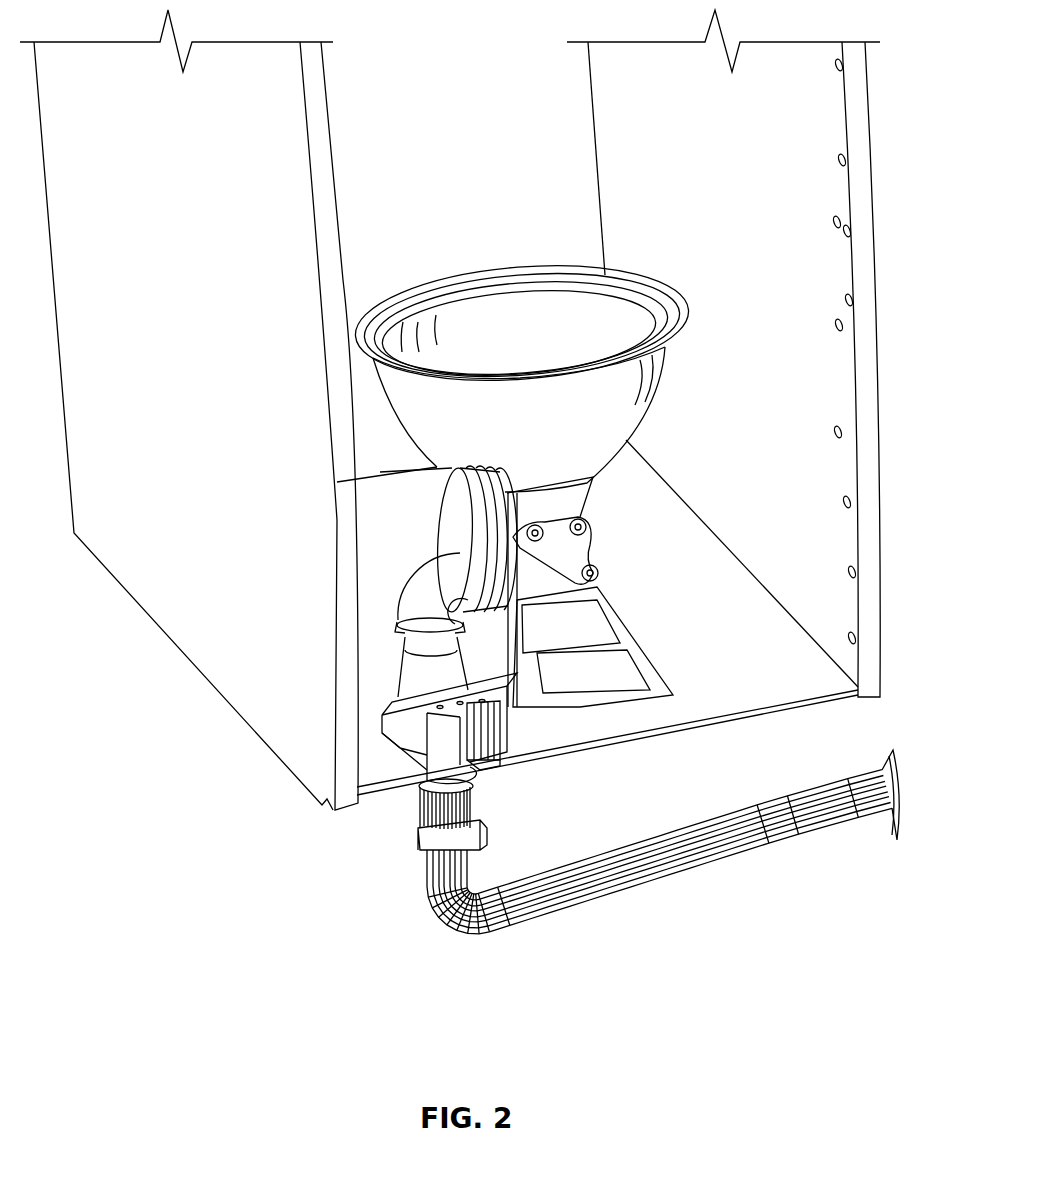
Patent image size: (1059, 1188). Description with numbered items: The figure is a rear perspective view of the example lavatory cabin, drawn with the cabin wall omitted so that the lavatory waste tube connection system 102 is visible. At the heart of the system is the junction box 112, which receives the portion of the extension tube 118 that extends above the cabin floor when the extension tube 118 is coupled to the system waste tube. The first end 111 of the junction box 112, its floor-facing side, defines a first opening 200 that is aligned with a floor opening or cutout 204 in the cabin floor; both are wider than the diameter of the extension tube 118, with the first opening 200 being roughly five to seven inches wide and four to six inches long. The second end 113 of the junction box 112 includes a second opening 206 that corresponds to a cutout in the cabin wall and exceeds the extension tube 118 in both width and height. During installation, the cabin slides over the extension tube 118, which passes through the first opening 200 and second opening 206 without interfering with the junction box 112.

The lavatory waste tube connection system 102 is at (368, 690).
The first end 111 is at (470, 737).
The junction box 112 is at (368, 728).
The second end 113 is at (398, 748).
The extension tube 118 is at (414, 788).
The first opening 200 is at (485, 756).
The floor opening or cutout 204 is at (482, 778).
The second opening 206 is at (555, 705).